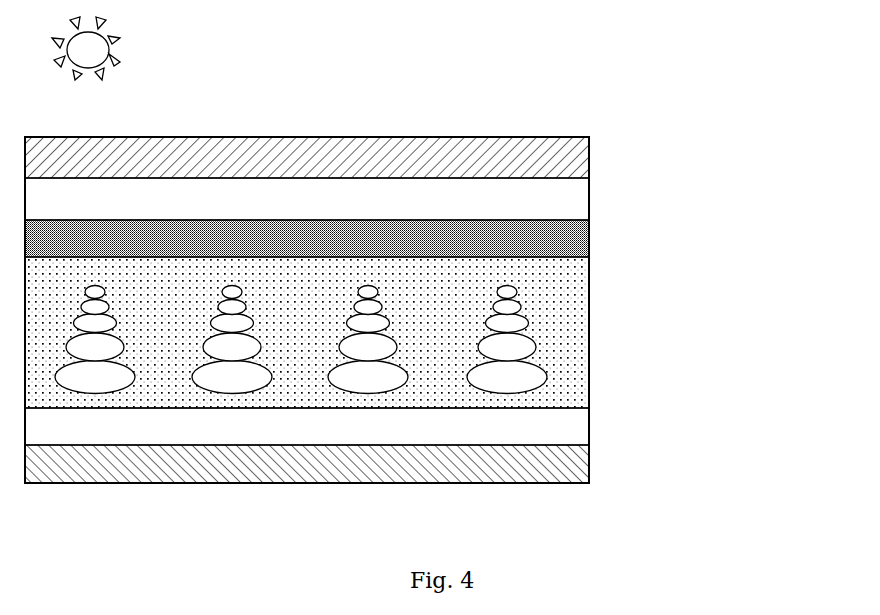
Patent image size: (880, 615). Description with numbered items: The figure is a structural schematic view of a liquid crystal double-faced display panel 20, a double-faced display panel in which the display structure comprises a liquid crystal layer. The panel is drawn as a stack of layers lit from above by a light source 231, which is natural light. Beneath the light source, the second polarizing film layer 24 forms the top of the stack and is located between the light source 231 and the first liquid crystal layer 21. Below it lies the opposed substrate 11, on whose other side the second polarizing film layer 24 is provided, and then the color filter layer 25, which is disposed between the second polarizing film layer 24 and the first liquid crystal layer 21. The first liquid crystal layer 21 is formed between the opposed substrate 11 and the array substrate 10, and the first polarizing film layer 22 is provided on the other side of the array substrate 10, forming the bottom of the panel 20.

The light source 231 is at (88, 55).
The liquid crystal double-faced display panel 20 is at (436, 310).
The second polarizing film layer 24 is at (572, 157).
The opposed substrate 11 is at (562, 203).
The color filter layer 25 is at (562, 240).
The first liquid crystal layer 21 is at (563, 350).
The array substrate 10 is at (570, 433).
The first polarizing film layer 22 is at (375, 464).